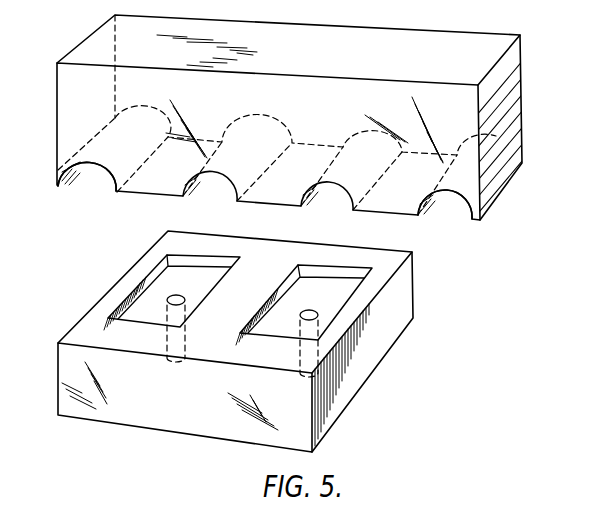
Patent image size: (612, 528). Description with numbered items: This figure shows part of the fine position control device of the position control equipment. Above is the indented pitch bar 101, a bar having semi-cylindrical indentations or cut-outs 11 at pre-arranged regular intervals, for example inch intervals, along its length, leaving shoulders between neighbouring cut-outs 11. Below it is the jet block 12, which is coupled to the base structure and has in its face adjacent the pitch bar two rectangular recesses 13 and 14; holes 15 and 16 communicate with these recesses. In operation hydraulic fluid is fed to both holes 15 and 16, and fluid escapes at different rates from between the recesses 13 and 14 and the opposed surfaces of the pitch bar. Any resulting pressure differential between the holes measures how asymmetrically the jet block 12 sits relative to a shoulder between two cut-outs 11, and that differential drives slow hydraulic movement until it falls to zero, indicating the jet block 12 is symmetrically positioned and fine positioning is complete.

The upper member with semicylindrical grooves 101 is at (314, 88).
The semi-cylindrical indentations or cut-outs 11 is at (75, 166).
The jet block 12 is at (368, 362).
The rectangular recess 13 is at (285, 308).
The rectangular recess 14 is at (130, 315).
The hole 15 is at (300, 315).
The hole 16 is at (173, 307).